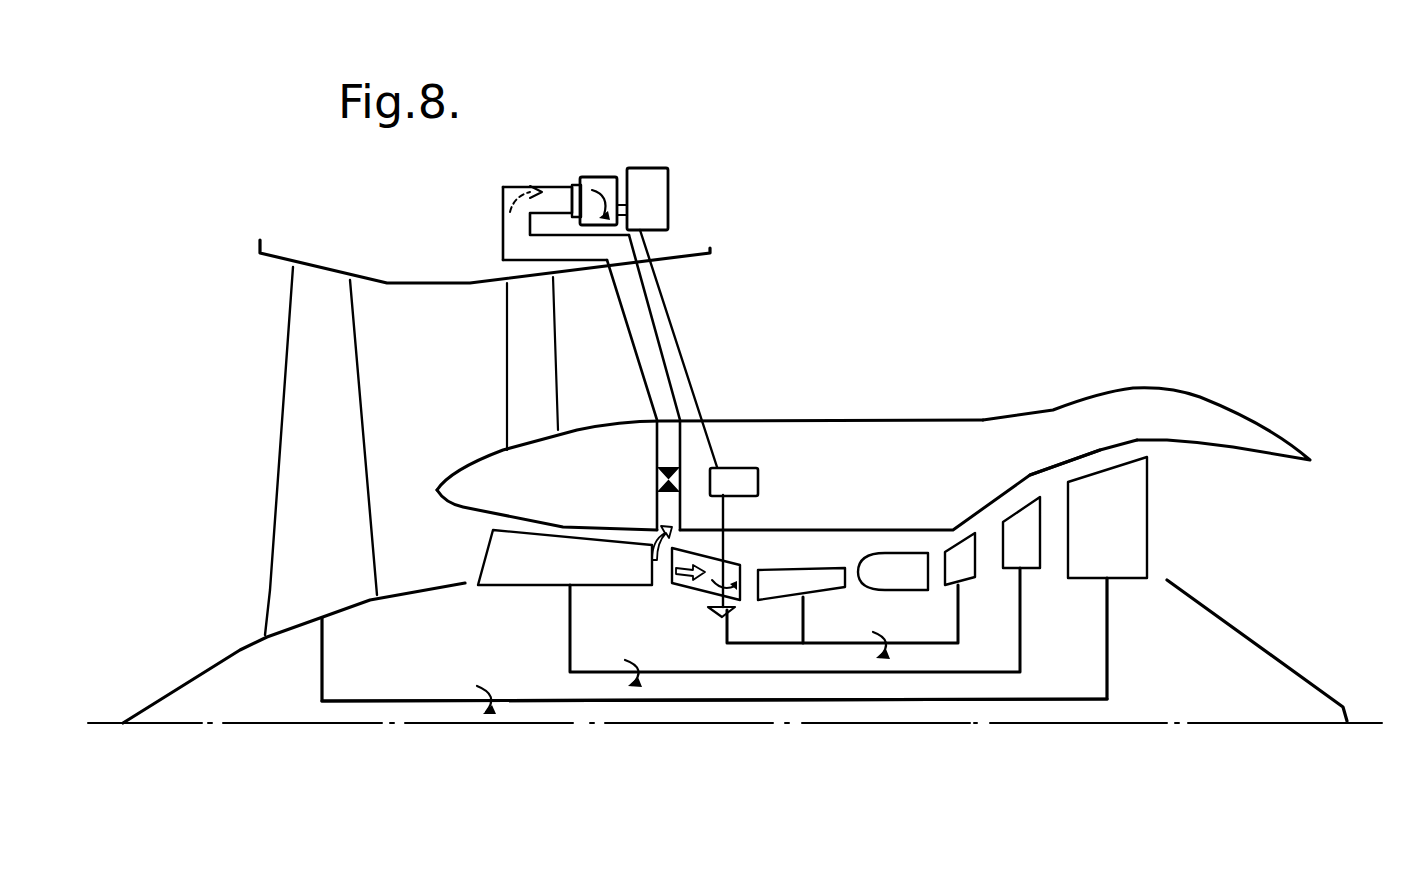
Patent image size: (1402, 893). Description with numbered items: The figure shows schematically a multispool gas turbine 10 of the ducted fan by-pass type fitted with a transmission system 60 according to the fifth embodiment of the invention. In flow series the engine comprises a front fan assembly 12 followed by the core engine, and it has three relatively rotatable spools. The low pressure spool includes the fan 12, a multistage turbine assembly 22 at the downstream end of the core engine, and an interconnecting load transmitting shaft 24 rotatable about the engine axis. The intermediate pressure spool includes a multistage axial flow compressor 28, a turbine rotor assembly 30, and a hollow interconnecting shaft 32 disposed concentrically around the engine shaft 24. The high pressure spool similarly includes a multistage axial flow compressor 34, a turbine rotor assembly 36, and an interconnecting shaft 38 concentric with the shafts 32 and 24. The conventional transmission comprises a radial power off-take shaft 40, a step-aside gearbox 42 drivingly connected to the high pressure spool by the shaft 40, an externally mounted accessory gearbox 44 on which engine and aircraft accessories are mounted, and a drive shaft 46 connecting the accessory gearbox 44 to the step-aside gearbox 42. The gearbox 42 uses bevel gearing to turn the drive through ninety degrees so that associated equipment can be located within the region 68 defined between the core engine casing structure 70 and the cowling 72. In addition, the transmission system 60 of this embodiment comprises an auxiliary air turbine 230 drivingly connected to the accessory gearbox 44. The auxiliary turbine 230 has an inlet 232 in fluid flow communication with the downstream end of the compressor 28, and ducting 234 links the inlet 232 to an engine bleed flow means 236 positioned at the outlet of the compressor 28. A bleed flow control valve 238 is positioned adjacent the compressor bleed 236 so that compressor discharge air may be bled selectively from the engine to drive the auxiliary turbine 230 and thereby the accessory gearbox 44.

The multispool gas turbine 10 is at (873, 263).
The front fan assembly 12 is at (302, 505).
The multistage turbine assembly 22 is at (1133, 567).
The load transmitting shaft 24 is at (380, 700).
The multistage axial flow compressor 28 is at (523, 572).
The turbine rotor assembly 30 is at (1032, 570).
The hollow interconnecting shaft 32 is at (683, 673).
The multistage axial flow compressor 34 is at (813, 577).
The turbine rotor assembly 36 is at (970, 573).
The interconnecting shaft 38 is at (840, 645).
The radial power off-take shaft 40 is at (723, 528).
The step-aside gearbox 42 is at (743, 487).
The accessory gearbox 44 is at (670, 187).
The drive shaft 46 is at (678, 338).
The transmission system 60 is at (683, 148).
The region 68 is at (932, 487).
The core engine casing structure 70 is at (1052, 465).
The cowling 72 is at (985, 418).
The auxiliary air turbine 230 is at (597, 177).
The inlet 232 is at (573, 187).
The ducting 234 is at (643, 345).
The engine bleed flow means 236 is at (663, 527).
The bleed flow control valve 238 is at (657, 474).